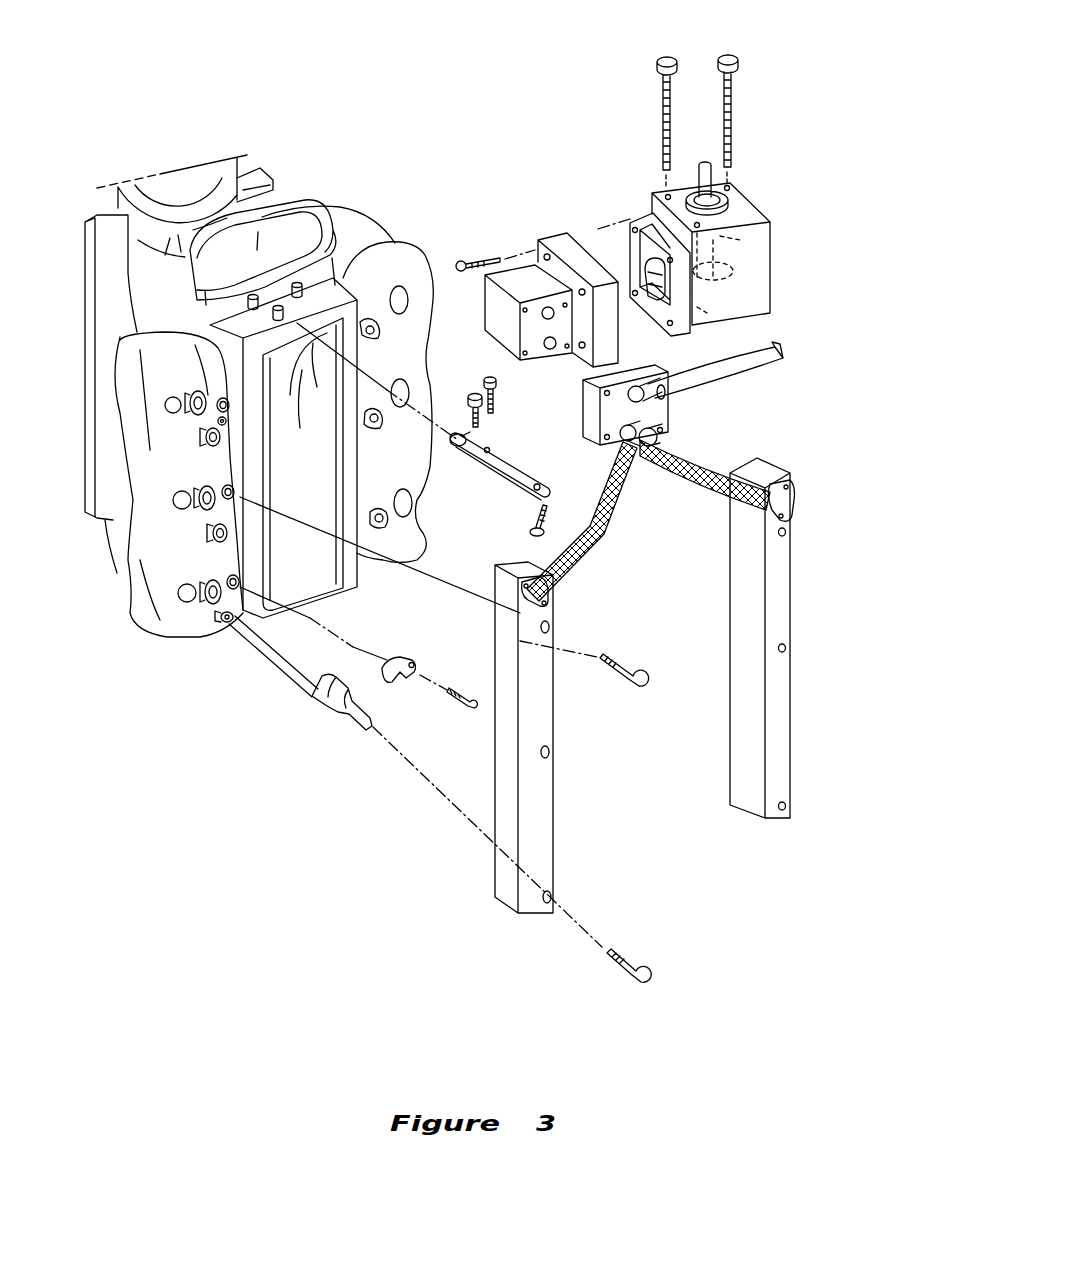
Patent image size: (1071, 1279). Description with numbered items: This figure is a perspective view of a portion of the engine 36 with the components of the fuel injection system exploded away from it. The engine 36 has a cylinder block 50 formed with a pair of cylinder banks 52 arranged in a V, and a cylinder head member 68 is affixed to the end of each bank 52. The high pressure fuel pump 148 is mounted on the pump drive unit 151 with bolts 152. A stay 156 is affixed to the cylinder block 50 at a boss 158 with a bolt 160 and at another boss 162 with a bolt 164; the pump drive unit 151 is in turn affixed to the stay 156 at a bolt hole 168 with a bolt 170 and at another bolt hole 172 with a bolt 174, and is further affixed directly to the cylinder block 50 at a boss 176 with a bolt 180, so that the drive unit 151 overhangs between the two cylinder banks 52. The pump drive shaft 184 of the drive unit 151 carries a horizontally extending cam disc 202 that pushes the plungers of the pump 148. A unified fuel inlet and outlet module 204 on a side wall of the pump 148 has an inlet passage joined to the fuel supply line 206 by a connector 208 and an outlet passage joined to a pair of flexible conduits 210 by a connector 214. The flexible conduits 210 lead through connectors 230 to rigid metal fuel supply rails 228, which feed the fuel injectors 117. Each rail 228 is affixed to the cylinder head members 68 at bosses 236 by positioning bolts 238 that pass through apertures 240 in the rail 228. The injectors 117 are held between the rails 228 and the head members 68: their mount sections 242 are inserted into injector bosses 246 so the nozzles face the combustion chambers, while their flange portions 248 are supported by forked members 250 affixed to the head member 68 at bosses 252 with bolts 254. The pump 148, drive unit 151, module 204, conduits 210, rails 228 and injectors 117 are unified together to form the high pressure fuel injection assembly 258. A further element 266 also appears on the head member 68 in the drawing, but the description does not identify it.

The engine 36 is at (262, 381).
The cylinder block 50 is at (333, 290).
The cylinder banks 52 is at (417, 247).
The cylinder head member 68 is at (172, 630).
The fuel injectors 117 is at (289, 709).
The high pressure fuel pump 148 is at (518, 270).
The pump drive unit 151 is at (752, 195).
The bolts 152 is at (465, 273).
The stay 156 is at (513, 487).
The boss 158 is at (250, 293).
The bolt 160 is at (470, 410).
The boss 162 is at (278, 305).
The bolt 164 is at (497, 402).
The bolt hole 168 is at (458, 448).
The bolt 170 is at (660, 105).
The bolt hole 172 is at (538, 477).
The bolt 174 is at (544, 505).
The boss 176 is at (298, 284).
The bolt 180 is at (730, 103).
The pump drive shaft 184 is at (699, 155).
The cam disc 202 is at (722, 247).
The fuel inlet and outlet module 204 is at (668, 405).
The fuel supply line 206 is at (777, 365).
The connector 208 is at (633, 388).
The flexible conduits 210 is at (713, 497).
The connector 214 is at (668, 427).
The fuel supply rails 228 is at (552, 858).
The connectors 230 is at (553, 598).
The bosses 236 is at (226, 423).
The positioning bolts 238 is at (640, 660).
The apertures 240 is at (549, 628).
The mount sections 242 is at (318, 682).
The injector bosses 246 is at (192, 397).
The flange portions 248 is at (325, 697).
The forked members 250 is at (400, 657).
The bosses 252 is at (255, 406).
The bolts 254 is at (452, 708).
The high pressure fuel injection assembly 258 is at (690, 719).
The nut 266 is at (205, 442).